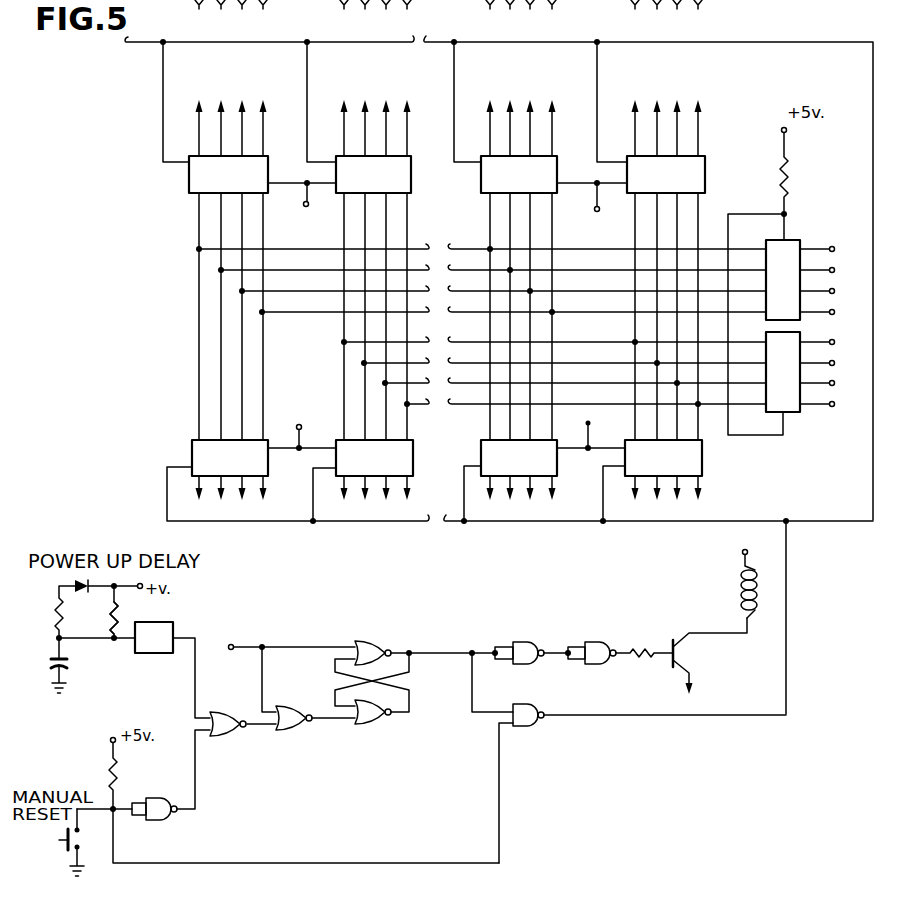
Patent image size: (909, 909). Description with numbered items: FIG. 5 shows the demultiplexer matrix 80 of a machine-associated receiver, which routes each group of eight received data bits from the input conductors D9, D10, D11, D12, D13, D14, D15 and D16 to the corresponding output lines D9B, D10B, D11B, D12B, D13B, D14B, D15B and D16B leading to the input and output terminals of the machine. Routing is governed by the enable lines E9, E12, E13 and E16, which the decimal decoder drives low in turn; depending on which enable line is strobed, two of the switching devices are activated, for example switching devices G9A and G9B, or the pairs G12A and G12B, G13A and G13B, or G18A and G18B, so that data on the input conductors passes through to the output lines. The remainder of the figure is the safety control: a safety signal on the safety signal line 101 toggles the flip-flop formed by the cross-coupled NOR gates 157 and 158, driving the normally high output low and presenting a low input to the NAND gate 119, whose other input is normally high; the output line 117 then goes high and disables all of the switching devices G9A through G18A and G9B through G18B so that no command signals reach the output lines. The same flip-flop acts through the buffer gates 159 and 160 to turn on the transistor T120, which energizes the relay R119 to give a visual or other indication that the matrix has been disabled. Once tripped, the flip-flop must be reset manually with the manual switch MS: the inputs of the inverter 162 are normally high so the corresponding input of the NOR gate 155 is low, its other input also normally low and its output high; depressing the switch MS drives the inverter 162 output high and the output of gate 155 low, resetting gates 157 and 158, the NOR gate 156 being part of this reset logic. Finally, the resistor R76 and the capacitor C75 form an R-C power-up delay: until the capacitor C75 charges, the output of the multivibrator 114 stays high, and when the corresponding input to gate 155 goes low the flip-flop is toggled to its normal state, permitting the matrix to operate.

The switching device G9A is at (228, 174).
The switching device G9B is at (373, 174).
The switching device G12A is at (519, 174).
The switching device G12B is at (666, 174).
The switching device G13A is at (230, 458).
The switching device G13B is at (374, 458).
The switching device G18A is at (519, 458).
The switching device G18B is at (663, 458).
The output line D9B is at (197, 114).
The output line D10B is at (219, 112).
The output line D11B is at (241, 114).
The output line D12B is at (267, 112).
The output line D13B is at (343, 113).
The output line D14B is at (364, 112).
The output line D15B is at (388, 112).
The output line D16B is at (428, 97).
The enable line E9 is at (305, 207).
The enable line E12 is at (594, 210).
The enable line E13 is at (314, 413).
The enable line E16 is at (592, 412).
The demultiplexer matrix 80 is at (452, 236).
The input conductor D9 is at (830, 249).
The input conductor D10 is at (834, 270).
The input conductor D11 is at (833, 291).
The input conductor D12 is at (834, 312).
The input conductor D13 is at (834, 342).
The input conductor D14 is at (834, 363).
The input conductor D15 is at (834, 383).
The input conductor D16 is at (834, 404).
The resistor R76 is at (118, 601).
The multivibrator 114 is at (154, 637).
The capacitor C75 is at (71, 662).
The safety signal line 101 is at (232, 645).
The NOR gate 155 is at (222, 738).
The NOR gate 156 is at (290, 733).
The NOR gate 157 is at (370, 727).
The NOR gate 158 is at (372, 645).
The buffer gate 159 is at (530, 645).
The buffer gate 160 is at (603, 645).
The transistor T120 is at (692, 650).
The relay R119 is at (740, 592).
The NAND gate 119 is at (530, 727).
The output line 117 is at (700, 715).
The inverter 162 is at (164, 800).
The manual switch MS is at (62, 836).